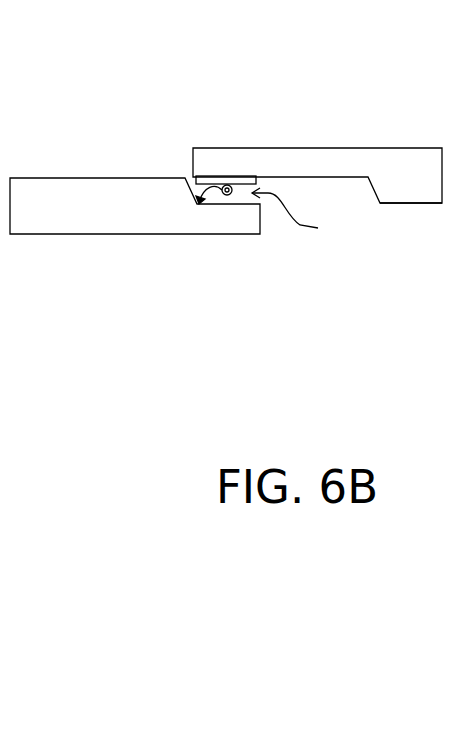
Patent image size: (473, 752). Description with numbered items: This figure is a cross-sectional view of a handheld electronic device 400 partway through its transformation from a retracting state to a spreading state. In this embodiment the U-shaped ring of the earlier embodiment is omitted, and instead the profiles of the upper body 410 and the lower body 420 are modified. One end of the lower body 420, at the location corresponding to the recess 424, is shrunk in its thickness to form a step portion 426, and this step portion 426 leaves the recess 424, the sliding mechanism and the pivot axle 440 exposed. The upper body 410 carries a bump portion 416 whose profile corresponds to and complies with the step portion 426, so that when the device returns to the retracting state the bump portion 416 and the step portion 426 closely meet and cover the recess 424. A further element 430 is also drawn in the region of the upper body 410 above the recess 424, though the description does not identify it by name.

The handheld electronic device 400 is at (465, 390).
The upper body 410 is at (332, 158).
The bump portion 416 is at (416, 190).
The lower body 420 is at (46, 222).
The recess 424 is at (308, 216).
The step portion 426 is at (214, 196).
The adhesive strip 430 is at (244, 176).
The pivot axle 440 is at (230, 196).